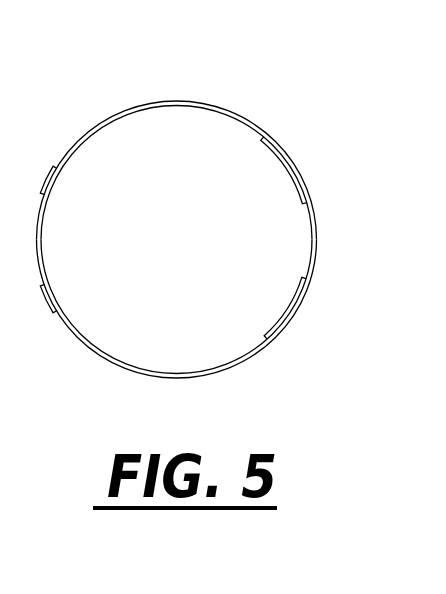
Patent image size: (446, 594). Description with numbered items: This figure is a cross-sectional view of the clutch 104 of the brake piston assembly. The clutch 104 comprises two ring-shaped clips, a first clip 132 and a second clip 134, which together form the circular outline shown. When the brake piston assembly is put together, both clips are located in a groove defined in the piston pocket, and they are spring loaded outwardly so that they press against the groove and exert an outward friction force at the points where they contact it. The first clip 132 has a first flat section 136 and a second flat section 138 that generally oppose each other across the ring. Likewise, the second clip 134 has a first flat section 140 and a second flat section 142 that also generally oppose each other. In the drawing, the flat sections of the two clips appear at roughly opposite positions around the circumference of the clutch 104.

The ring 104 is at (177, 237).
The first ring portion 132 is at (116, 116).
The second ring portion 134 is at (113, 365).
The first hinge 136 is at (68, 157).
The second hinge 140 is at (68, 311).
The first overlap section 142 is at (288, 176).
The second overlap section 138 is at (284, 308).